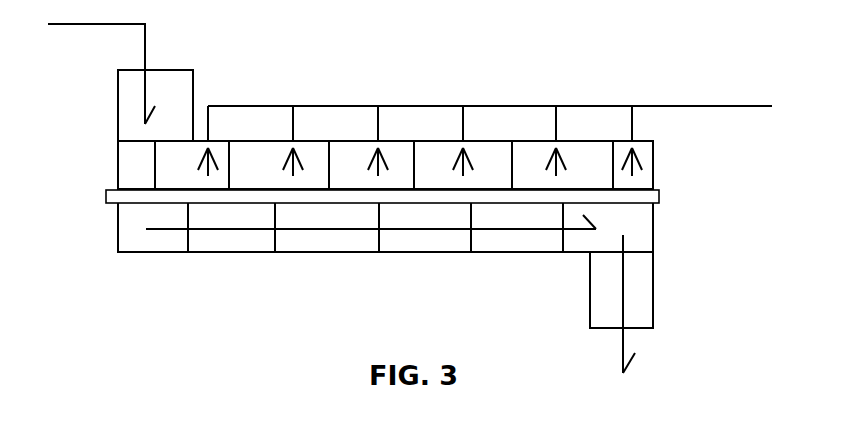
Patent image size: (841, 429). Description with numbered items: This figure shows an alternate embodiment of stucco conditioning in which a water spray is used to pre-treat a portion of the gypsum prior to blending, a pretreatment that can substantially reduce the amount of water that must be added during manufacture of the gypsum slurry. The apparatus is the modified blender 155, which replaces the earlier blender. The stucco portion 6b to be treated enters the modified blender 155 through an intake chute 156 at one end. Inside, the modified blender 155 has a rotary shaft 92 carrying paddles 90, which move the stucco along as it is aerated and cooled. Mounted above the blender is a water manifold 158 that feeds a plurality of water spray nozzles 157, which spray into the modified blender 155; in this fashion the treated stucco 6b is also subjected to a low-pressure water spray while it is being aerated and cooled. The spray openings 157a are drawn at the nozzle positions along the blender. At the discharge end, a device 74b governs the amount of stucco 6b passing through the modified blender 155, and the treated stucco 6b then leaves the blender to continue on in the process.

The stucco portion 6b is at (353, 198).
The intake chute 156 is at (128, 105).
The water spray nozzles 157 is at (377, 123).
The flow arrows / openings 157a is at (387, 172).
The water manifold 158 is at (492, 105).
The rotary shaft 92 is at (103, 195).
The modified blender 155 is at (147, 242).
The paddles 90 is at (275, 238).
The device for governing the amount of stucco 74b is at (643, 287).